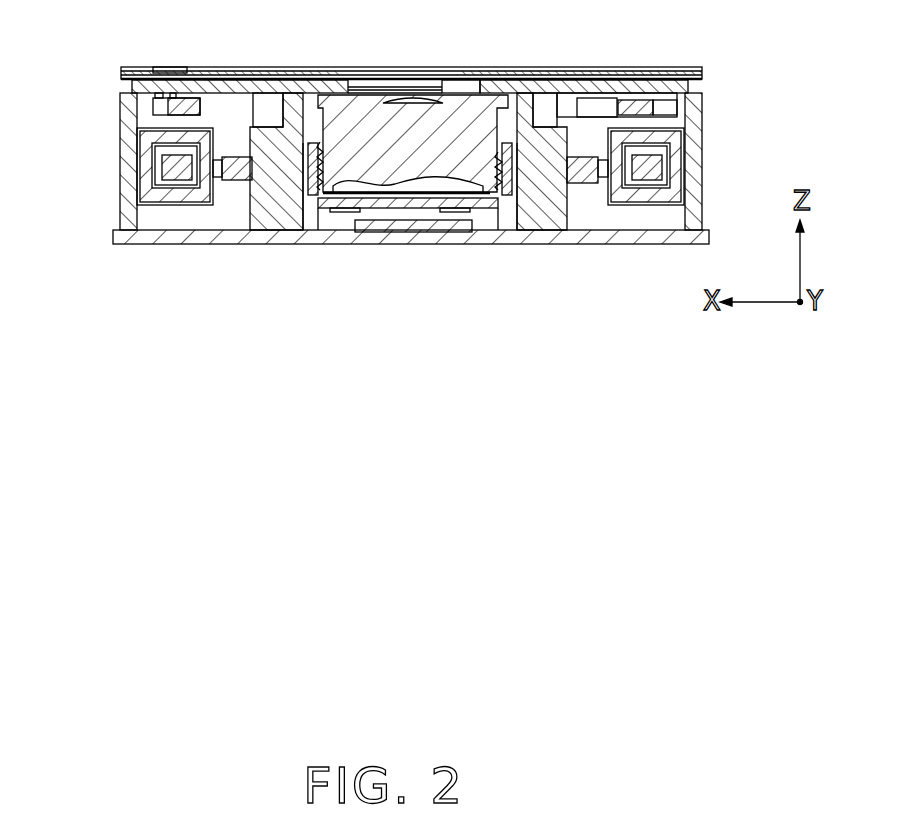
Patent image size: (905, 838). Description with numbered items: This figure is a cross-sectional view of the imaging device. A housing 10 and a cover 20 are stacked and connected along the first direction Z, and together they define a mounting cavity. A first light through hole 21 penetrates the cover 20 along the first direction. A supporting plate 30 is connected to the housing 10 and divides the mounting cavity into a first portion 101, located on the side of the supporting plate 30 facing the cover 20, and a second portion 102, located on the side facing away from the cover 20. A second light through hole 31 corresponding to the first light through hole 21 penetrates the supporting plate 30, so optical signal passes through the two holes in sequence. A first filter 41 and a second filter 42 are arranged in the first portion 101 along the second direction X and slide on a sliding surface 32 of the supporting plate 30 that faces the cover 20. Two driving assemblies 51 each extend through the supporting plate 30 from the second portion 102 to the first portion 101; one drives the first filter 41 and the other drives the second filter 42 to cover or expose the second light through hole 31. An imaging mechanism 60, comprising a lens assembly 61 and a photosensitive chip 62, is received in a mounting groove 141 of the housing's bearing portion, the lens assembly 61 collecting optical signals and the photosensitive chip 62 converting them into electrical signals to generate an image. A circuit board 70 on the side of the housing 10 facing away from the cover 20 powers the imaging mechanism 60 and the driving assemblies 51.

The housing 10 is at (60, 67).
The first portion 101 is at (170, 79).
The second portion 102 is at (147, 113).
The cover 20 is at (620, 72).
The first light through hole 21 is at (357, 70).
The supporting plate 30 is at (652, 93).
The second light through hole 31 is at (403, 88).
The mounting groove 141 is at (465, 93).
The first filter 41 is at (533, 78).
The second filter 42 is at (252, 76).
The sliding surface 32 is at (573, 93).
The driving assembly 51 is at (178, 175).
The imaging mechanism 60 is at (408, 247).
The lens assembly 61 is at (400, 178).
The photosensitive chip 62 is at (370, 283).
The circuit board 70 is at (306, 235).